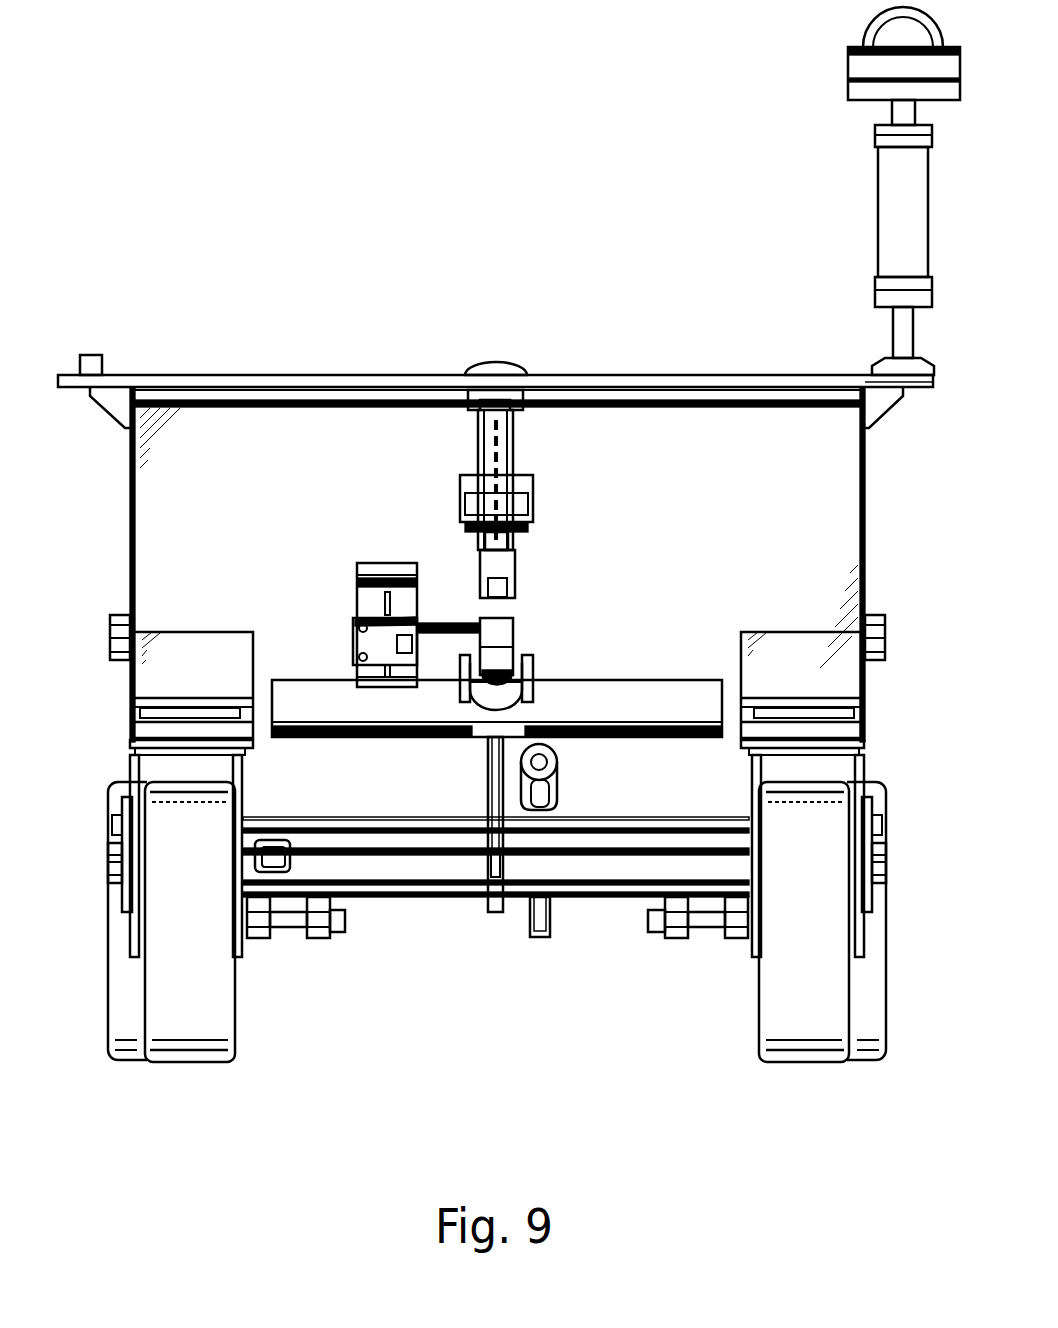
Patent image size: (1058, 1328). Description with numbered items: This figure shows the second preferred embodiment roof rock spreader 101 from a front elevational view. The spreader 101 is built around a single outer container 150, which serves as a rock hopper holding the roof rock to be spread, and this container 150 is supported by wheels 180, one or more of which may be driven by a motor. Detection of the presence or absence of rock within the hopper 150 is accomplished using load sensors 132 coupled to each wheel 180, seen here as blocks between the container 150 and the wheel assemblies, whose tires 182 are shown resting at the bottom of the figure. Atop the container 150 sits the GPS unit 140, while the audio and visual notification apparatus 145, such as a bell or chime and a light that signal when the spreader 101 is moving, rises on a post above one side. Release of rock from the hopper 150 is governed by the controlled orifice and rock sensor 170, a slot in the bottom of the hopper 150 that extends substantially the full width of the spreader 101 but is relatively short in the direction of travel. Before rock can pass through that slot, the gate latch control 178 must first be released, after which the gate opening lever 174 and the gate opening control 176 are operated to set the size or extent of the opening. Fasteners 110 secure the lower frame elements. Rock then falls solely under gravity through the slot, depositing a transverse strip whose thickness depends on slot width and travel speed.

The roof rock spreader 101 is at (207, 173).
The fasteners 110 is at (677, 932).
The load sensors 132 is at (137, 733).
The GPS unit 140 is at (488, 370).
The audio and visual notification apparatus 145 is at (848, 46).
The outer container 150 is at (129, 529).
The controlled orifice and rock sensor 170 is at (587, 866).
The gate opening lever 174 is at (490, 907).
The gate opening control 176 is at (351, 628).
The gate latch control 178 is at (533, 920).
The wheels 180 is at (500, 928).
The wheels 182 is at (752, 998).